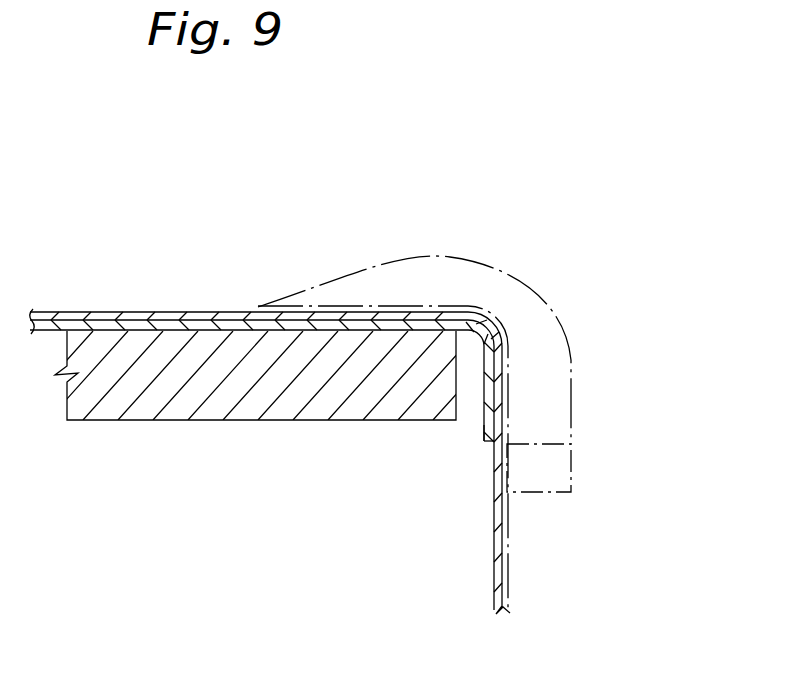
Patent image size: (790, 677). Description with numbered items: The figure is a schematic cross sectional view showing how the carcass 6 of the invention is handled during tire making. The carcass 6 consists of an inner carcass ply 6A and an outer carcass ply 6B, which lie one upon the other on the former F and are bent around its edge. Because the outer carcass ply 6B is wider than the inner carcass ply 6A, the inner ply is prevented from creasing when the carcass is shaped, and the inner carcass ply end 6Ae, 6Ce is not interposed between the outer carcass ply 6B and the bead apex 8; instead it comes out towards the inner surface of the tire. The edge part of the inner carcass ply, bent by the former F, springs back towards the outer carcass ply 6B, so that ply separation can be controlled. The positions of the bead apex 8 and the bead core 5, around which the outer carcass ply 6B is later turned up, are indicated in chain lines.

The carcass 6 is at (270, 367).
The inner carcass ply 6A is at (98, 328).
The outer carcass ply 6B is at (141, 328).
The inner carcass ply end 6Ae is at (425, 498).
The inner carcass ply end 6Ce is at (488, 448).
The bead apex 8 is at (565, 323).
The bead core 5 is at (572, 462).
The former F is at (263, 420).